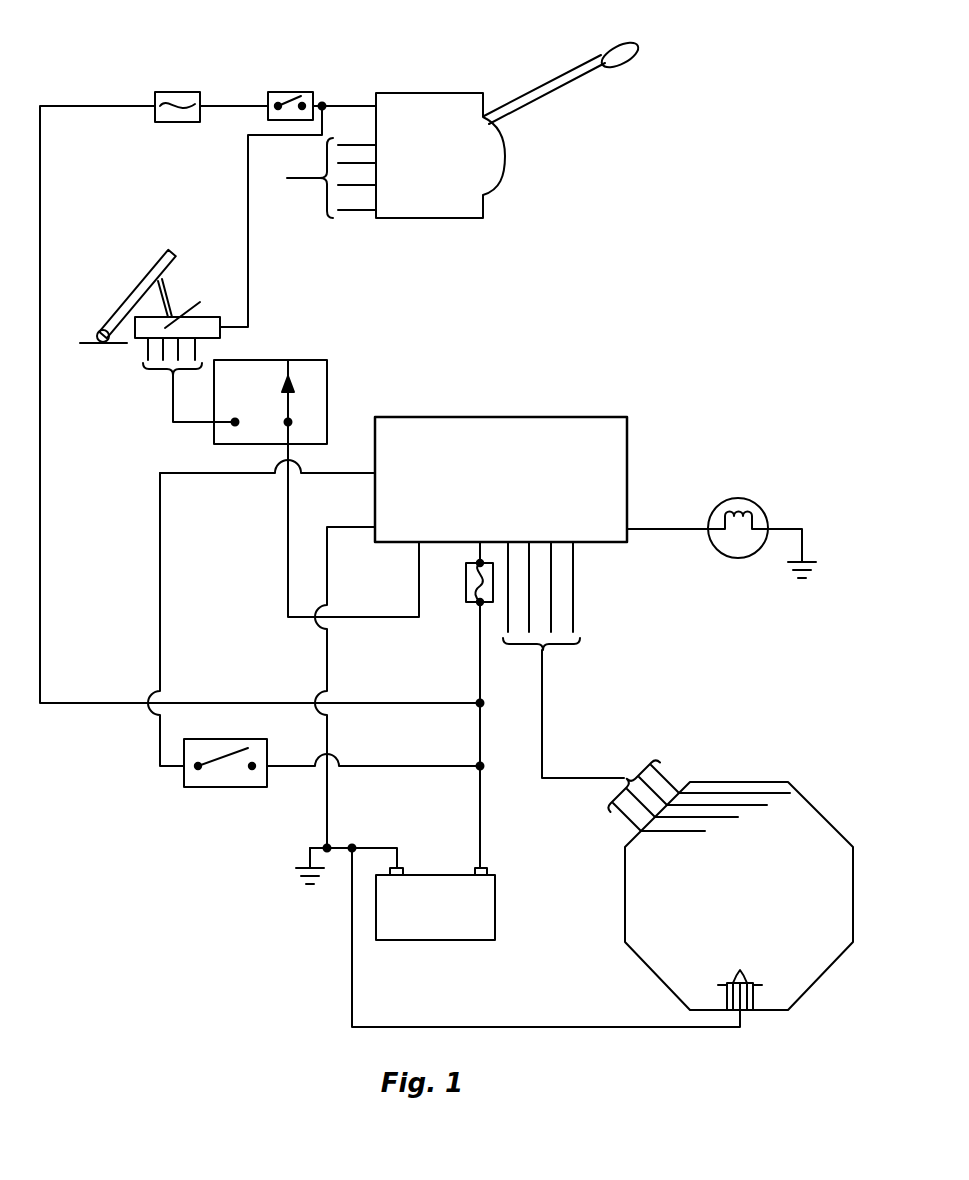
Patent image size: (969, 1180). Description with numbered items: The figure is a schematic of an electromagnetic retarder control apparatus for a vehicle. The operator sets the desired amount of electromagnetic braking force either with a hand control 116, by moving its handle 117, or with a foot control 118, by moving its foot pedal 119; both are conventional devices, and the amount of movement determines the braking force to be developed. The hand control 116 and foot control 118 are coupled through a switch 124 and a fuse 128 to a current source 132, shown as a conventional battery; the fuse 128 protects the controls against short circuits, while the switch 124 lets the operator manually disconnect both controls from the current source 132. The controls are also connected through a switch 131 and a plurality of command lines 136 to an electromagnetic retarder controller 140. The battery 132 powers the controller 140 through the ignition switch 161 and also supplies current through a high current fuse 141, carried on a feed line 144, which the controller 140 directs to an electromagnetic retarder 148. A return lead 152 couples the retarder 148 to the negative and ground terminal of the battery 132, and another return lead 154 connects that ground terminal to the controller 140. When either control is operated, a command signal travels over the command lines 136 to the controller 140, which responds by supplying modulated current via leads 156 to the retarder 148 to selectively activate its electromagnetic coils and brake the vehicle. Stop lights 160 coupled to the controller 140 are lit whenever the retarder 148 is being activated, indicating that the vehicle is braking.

The hand control 116 is at (434, 88).
The handle 117 is at (533, 90).
The foot control 118 is at (197, 240).
The foot pedal 119 is at (138, 288).
The switch 124 is at (283, 92).
The fuse 128 is at (174, 92).
The switch 131 is at (305, 388).
The current source 132 is at (495, 905).
The command lines 136 is at (288, 507).
The electromagnetic retarder controller 140 is at (507, 417).
The high current fuse 141 is at (453, 584).
The feed line 144 is at (479, 642).
The electromagnetic retarder 148 is at (732, 782).
The return lead 152 is at (440, 1027).
The return lead 154 is at (327, 673).
The leads 156 is at (545, 680).
The stop lights 160 is at (717, 555).
The ignition switch 161 is at (185, 776).